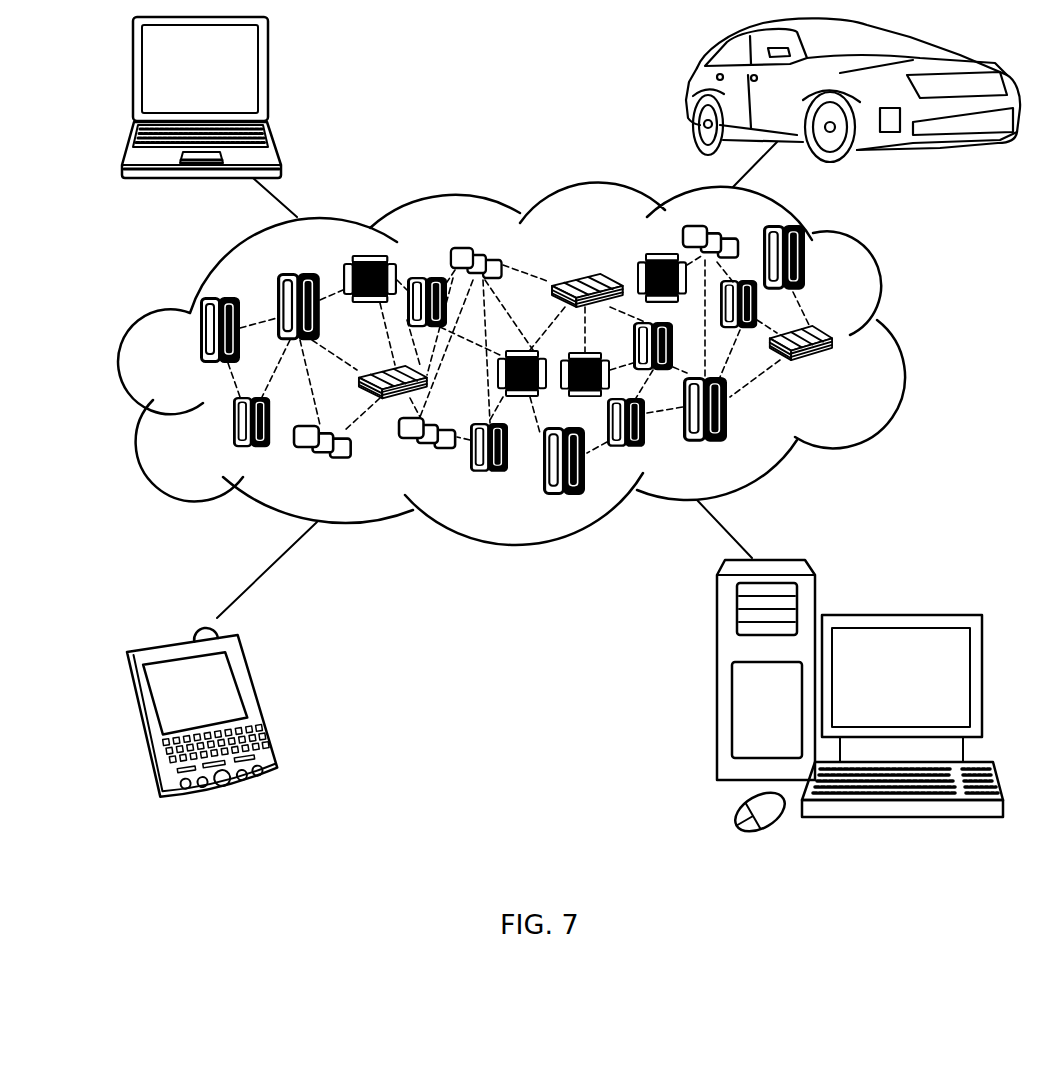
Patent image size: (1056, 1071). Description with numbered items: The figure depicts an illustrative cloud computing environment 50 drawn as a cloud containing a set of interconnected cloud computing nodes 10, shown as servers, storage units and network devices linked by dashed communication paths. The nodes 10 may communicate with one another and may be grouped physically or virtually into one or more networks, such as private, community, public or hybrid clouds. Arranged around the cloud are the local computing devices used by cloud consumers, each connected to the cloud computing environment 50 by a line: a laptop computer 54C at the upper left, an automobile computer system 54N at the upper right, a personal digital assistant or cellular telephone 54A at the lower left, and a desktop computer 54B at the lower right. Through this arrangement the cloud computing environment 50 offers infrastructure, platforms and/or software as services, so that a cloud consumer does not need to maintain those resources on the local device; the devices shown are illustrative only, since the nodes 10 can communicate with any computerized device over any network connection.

The laptop computer 54C is at (267, 78).
The automobile computer system 54N is at (688, 93).
The cloud computing environment 50 is at (898, 339).
The cloud computing nodes 10 is at (850, 372).
The personal digital assistant or cellular telephone 54A is at (257, 709).
The desktop computer 54B is at (897, 615).